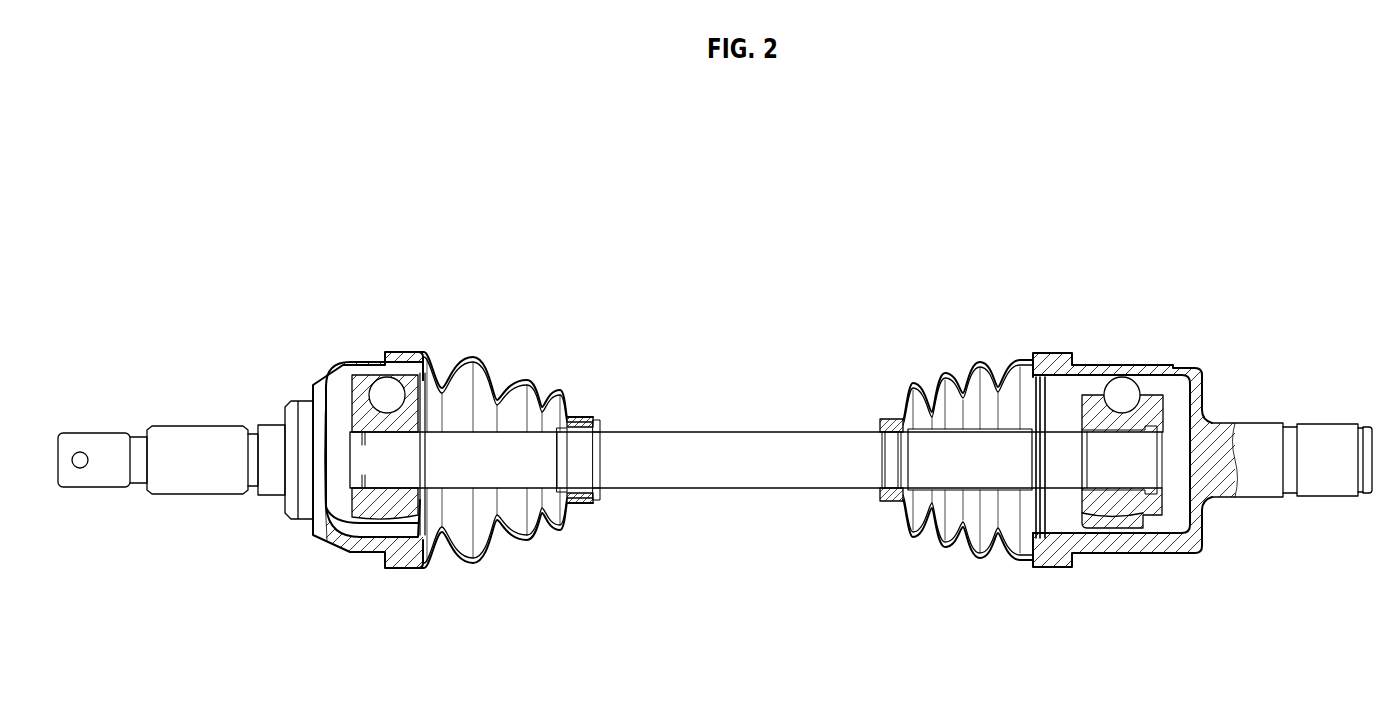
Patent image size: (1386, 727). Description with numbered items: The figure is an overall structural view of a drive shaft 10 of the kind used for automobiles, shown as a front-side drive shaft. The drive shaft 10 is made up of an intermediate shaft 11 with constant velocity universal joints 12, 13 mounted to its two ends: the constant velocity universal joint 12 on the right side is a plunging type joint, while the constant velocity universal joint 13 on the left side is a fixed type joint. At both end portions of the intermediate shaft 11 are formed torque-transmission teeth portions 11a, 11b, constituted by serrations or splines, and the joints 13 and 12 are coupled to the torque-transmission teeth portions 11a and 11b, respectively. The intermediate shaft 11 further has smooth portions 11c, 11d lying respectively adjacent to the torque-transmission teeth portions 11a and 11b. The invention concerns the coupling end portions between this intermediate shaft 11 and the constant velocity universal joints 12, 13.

The drive shaft 10 is at (825, 377).
The intermediate shaft 11 is at (748, 430).
The torque-transmission teeth portion 11a is at (390, 472).
The torque-transmission teeth portion 11b is at (1113, 472).
The smooth portion 11c is at (513, 467).
The smooth portion 11d is at (995, 473).
The constant velocity universal joint 12 is at (1133, 363).
The constant velocity universal joint 13 is at (363, 365).